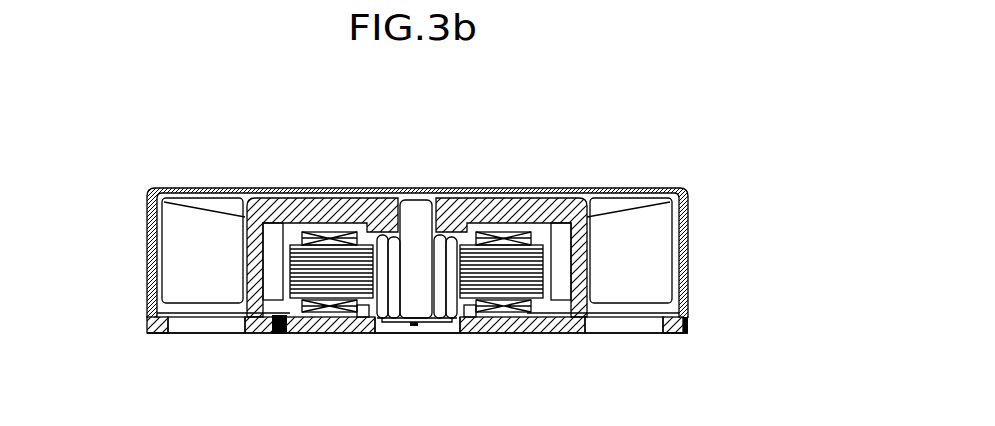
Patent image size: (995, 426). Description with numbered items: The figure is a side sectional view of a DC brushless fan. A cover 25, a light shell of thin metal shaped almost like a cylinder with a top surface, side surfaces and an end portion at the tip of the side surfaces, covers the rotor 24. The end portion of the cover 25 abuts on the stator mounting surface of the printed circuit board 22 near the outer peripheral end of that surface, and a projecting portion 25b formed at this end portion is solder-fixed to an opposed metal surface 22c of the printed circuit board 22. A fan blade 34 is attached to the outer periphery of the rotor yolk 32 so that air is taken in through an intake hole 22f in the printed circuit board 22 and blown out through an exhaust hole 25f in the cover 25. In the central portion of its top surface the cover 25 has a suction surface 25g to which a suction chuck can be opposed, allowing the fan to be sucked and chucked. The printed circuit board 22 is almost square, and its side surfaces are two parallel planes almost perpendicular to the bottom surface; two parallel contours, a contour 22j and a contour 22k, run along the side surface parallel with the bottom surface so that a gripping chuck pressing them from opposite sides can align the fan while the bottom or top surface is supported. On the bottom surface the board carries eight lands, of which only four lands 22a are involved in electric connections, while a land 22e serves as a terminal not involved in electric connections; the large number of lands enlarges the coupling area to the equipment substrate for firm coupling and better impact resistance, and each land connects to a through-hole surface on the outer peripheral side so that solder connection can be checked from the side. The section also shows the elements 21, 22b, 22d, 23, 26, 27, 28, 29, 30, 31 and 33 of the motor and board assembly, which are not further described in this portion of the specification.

The coil 21 is at (506, 303).
The printed circuit board 22 is at (357, 322).
The lands 22a is at (257, 320).
The base plate portion 22b is at (262, 312).
The opposed metal surface 22c is at (686, 335).
The base plate fixing portion 22d is at (278, 334).
The land 22e is at (667, 333).
The intake hole 22f is at (197, 322).
The contour 22j is at (146, 318).
The contour 22k is at (144, 333).
The bearing holder 23 is at (375, 328).
The rotor 24 is at (458, 205).
The cover 25 is at (545, 188).
The projecting portion 25b is at (689, 322).
The exhaust hole 25f is at (190, 188).
The suction surface 25g is at (362, 188).
The stator core 26 is at (532, 303).
The core terminal portion 27 is at (482, 315).
The lower bearing 28 is at (400, 330).
The upper bearing 29 is at (441, 303).
The bearing sleeve 30 is at (428, 328).
The shaft 31 is at (417, 212).
The rotor yolk 32 is at (292, 206).
The magnet 33 is at (275, 232).
The fan blade 34 is at (213, 233).